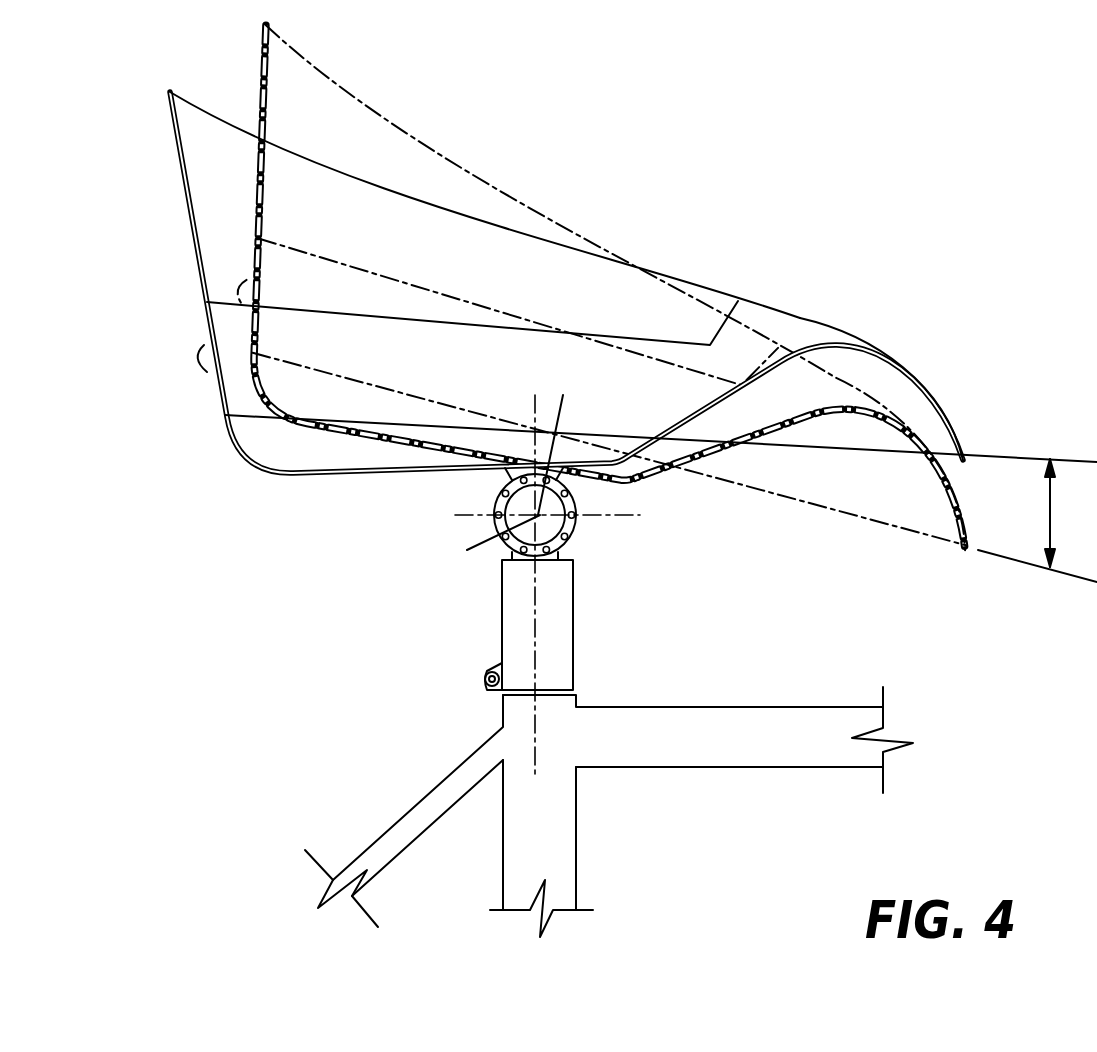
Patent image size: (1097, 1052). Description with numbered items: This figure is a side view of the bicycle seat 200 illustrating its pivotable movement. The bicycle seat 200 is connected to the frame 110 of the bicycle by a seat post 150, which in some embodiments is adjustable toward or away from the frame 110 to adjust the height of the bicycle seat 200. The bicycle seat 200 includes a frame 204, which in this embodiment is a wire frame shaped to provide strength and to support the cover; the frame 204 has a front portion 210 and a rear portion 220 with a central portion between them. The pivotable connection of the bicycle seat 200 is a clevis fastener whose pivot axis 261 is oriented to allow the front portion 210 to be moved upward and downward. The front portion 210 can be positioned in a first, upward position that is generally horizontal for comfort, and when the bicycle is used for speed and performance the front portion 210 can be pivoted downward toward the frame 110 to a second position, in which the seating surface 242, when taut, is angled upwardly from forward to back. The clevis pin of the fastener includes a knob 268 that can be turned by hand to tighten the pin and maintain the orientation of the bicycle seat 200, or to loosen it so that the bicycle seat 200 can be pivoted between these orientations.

The frame 110 is at (828, 748).
The seat post 150 is at (565, 643).
The bicycle seat 200 is at (782, 205).
The frame 204 is at (266, 99).
The front portion 210 is at (975, 330).
The rear portion 220 is at (198, 58).
The seating surface 242 is at (548, 200).
The pivot axis 261 is at (538, 514).
The knob 268 is at (500, 537).